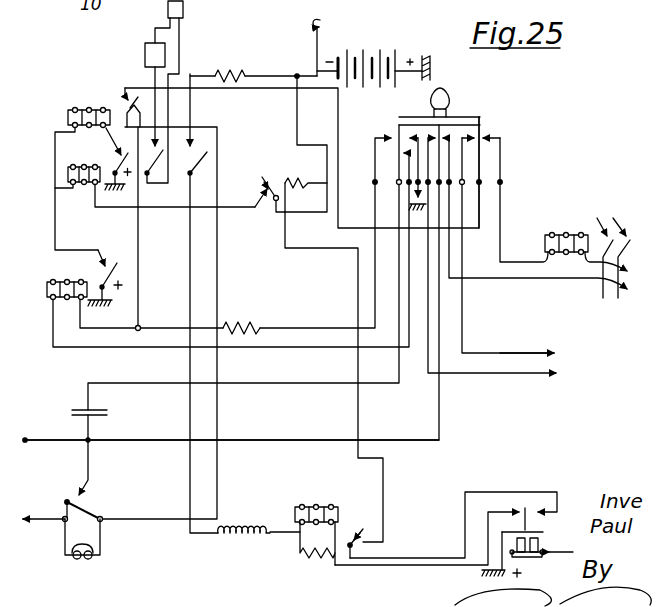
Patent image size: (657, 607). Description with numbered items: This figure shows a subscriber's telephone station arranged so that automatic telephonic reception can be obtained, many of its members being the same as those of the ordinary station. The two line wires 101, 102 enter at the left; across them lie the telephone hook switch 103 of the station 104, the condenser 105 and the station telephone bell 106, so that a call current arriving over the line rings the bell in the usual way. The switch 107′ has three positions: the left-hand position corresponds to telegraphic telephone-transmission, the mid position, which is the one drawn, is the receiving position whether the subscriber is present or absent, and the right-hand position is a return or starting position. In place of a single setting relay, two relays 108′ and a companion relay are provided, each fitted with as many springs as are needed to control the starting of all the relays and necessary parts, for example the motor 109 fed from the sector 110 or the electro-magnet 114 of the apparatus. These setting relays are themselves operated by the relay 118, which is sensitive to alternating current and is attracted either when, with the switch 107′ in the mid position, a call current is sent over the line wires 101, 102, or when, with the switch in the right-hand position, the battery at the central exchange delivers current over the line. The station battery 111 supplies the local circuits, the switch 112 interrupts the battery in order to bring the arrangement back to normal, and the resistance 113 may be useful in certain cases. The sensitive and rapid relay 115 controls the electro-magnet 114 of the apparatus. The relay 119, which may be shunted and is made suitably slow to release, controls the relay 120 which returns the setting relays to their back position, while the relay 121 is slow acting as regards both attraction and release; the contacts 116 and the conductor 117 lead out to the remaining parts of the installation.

The line wire 101 is at (227, 429).
The line wire 102 is at (37, 509).
The telephone hook switch 103 is at (64, 501).
The station 104 is at (75, 549).
The condenser 105 is at (72, 401).
The station telephone bell 106 is at (241, 318).
The three-position switch 107′ is at (442, 158).
The relay 108′ is at (98, 168).
The motor 109 is at (145, 50).
The sector 110 is at (168, 8).
The station battery 111 is at (378, 59).
The switch 112 is at (296, 26).
The resistance 113 is at (229, 64).
The electro-magnet 114 is at (244, 546).
The sensitive and rapid relay 115 is at (528, 542).
The contacts 116 is at (627, 266).
The conductor 117 is at (527, 347).
The relay sensitive to alternating current 118 is at (83, 283).
The slow-release relay 119 is at (322, 541).
The relay 120 is at (294, 184).
The slow-acting relay 121 is at (559, 261).